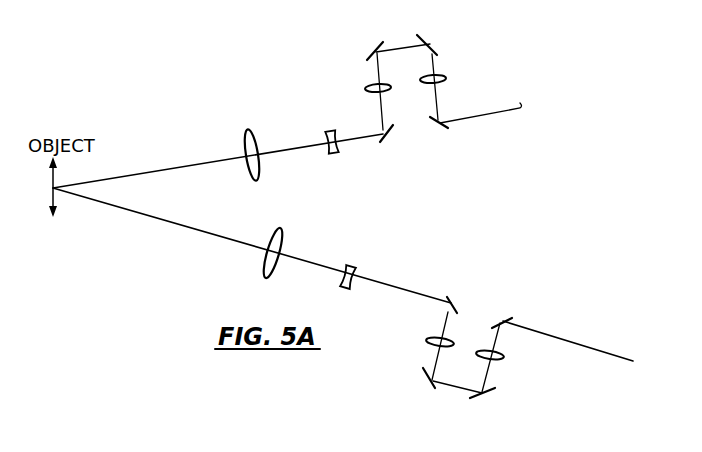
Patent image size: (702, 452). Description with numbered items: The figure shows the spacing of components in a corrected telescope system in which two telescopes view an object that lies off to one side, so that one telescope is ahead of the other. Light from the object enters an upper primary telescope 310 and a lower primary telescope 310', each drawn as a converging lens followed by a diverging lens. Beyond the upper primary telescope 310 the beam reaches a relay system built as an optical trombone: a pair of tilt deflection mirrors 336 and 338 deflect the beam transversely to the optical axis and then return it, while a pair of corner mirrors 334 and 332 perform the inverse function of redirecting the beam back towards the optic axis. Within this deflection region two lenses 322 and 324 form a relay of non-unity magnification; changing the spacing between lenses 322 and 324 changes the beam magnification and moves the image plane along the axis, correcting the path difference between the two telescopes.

The primary telescope 310 is at (216, 151).
The primary telescope 310' is at (354, 252).
The lens 322 is at (366, 89).
The lens 324 is at (452, 74).
The corner mirror 332 is at (429, 39).
The corner mirror 334 is at (375, 42).
The tilt deflection mirror 336 is at (382, 135).
The tilt deflection mirror 338 is at (442, 132).